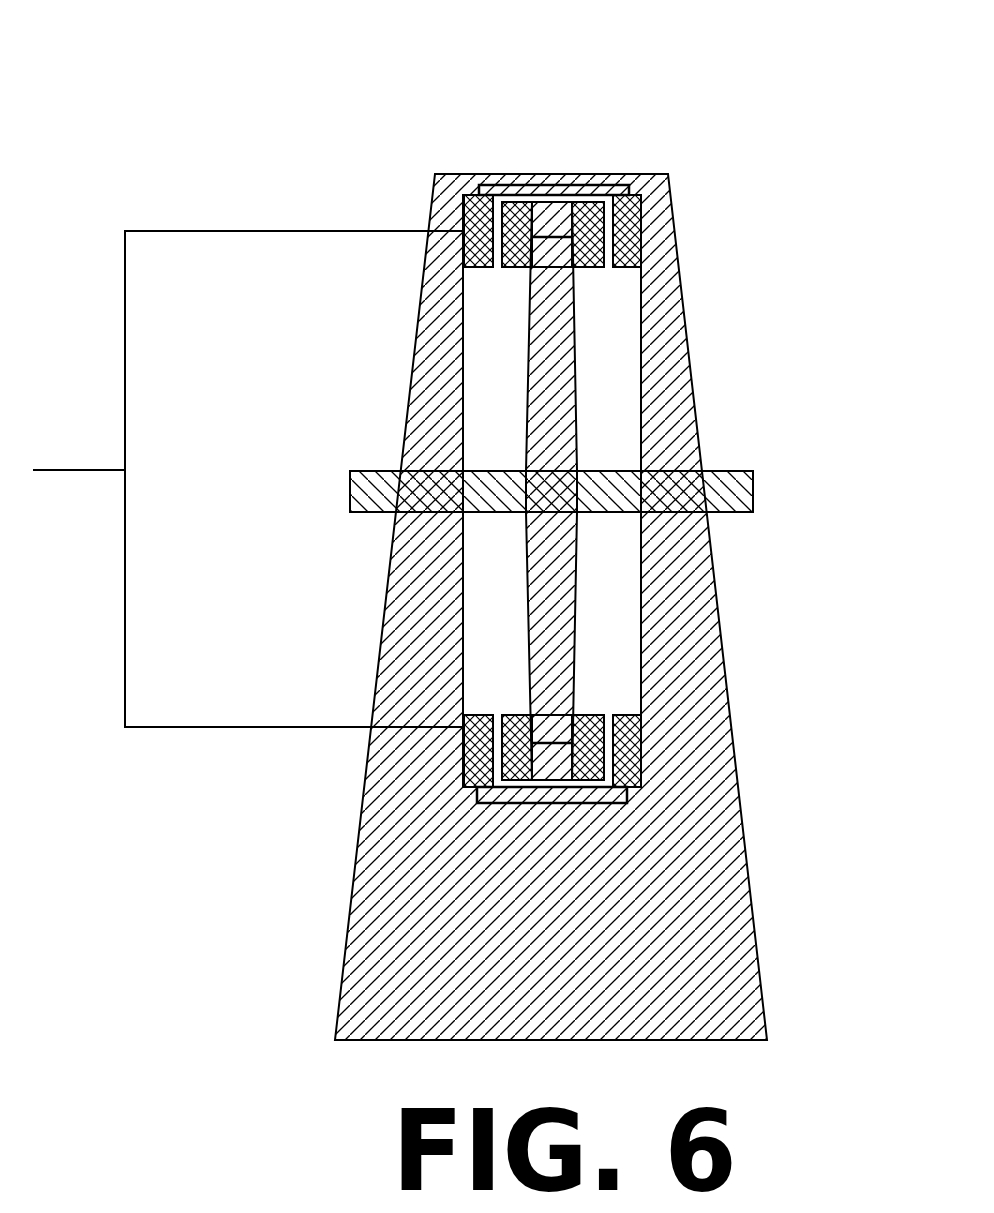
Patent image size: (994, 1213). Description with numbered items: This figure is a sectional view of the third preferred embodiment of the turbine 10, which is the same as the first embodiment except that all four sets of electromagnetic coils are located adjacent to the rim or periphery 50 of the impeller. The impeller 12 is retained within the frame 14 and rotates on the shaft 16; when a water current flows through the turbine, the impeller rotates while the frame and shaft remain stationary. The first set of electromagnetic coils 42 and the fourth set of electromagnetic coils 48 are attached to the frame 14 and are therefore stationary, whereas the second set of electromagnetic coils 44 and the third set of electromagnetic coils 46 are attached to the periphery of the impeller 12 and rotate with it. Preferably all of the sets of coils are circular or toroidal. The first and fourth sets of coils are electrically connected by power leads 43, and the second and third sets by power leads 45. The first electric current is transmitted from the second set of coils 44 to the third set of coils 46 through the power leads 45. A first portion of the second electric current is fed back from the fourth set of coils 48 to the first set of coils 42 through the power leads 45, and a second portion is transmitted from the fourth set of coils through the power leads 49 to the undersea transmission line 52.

The turbine 10 is at (444, 529).
The impeller 12 is at (527, 438).
The frame 14 is at (365, 763).
The shaft 16 is at (350, 490).
The first set of electromagnetic coils 42 is at (632, 268).
The power leads 43 is at (583, 174).
The second set of electromagnetic coils 44 is at (588, 268).
The power leads 45 is at (545, 239).
The third set of electromagnetic coils 46 is at (512, 268).
The fourth set of electromagnetic coils 48 is at (475, 268).
The power leads 49 is at (175, 231).
The rim or periphery of the impeller 50 is at (547, 200).
The undersea transmission line 52 is at (47, 470).